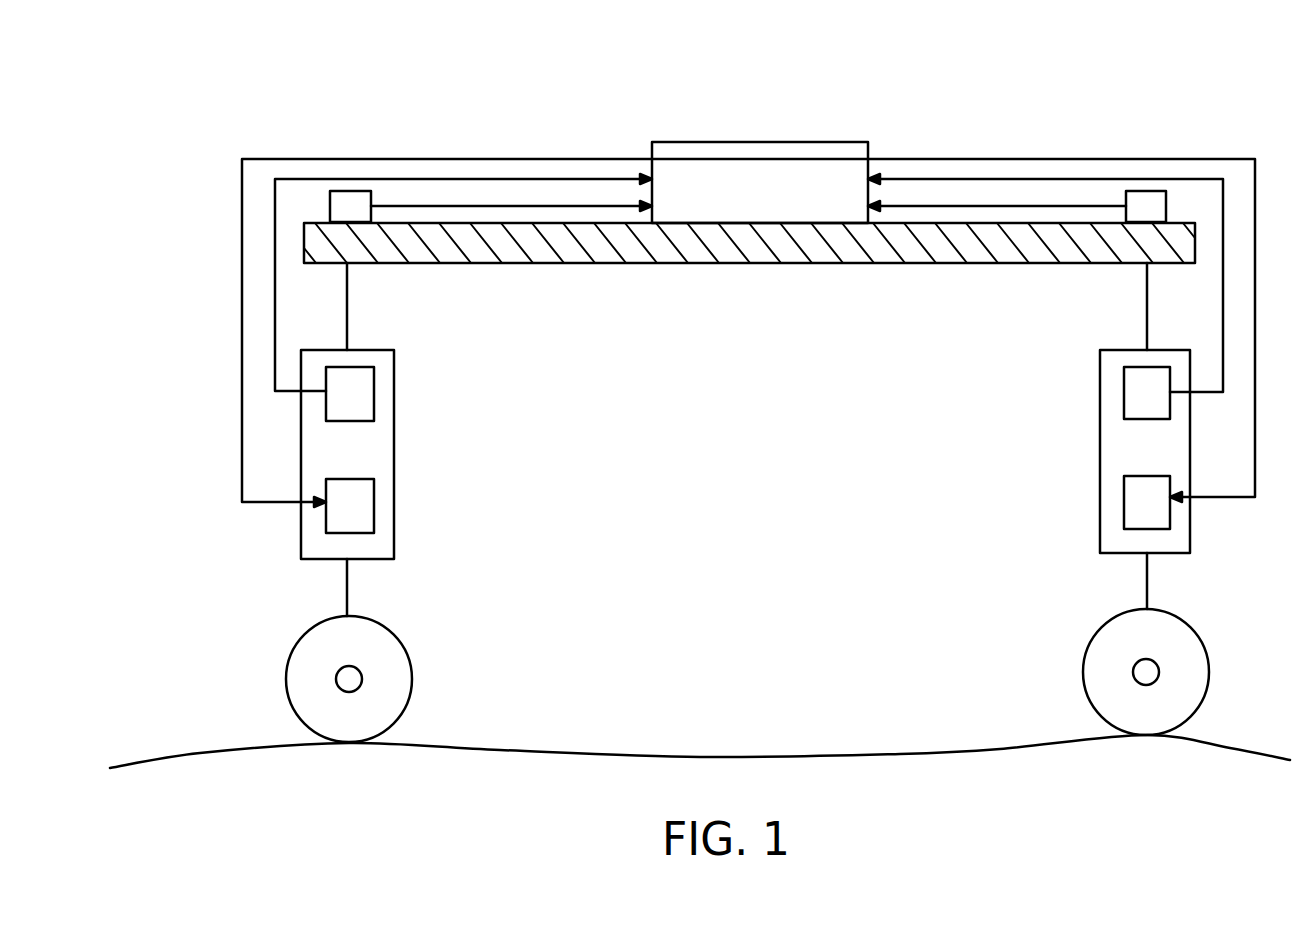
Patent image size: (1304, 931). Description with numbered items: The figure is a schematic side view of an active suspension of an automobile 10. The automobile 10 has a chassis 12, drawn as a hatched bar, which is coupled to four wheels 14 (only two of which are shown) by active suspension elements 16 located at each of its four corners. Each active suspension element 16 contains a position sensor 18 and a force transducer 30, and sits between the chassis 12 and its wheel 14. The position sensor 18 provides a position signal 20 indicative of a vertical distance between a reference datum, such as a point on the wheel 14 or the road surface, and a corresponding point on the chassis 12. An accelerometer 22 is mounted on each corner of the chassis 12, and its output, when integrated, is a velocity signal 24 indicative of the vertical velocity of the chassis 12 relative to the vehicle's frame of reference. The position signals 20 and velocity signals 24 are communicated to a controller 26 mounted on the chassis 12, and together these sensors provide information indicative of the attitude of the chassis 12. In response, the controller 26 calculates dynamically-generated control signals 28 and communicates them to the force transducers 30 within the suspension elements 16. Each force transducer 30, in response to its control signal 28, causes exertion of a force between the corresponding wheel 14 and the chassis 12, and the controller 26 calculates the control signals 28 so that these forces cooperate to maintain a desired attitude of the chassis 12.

The automobile 10 is at (816, 76).
The chassis 12 is at (792, 245).
The wheel 14 is at (414, 674).
The active suspension element 16 is at (338, 465).
The position sensor 18 is at (374, 401).
The position signal 20 is at (278, 275).
The accelerometer 22 is at (357, 191).
The velocity signal 24 is at (533, 207).
The controller 26 is at (746, 192).
The control signal 28 is at (277, 503).
The force transducer 30 is at (374, 513).